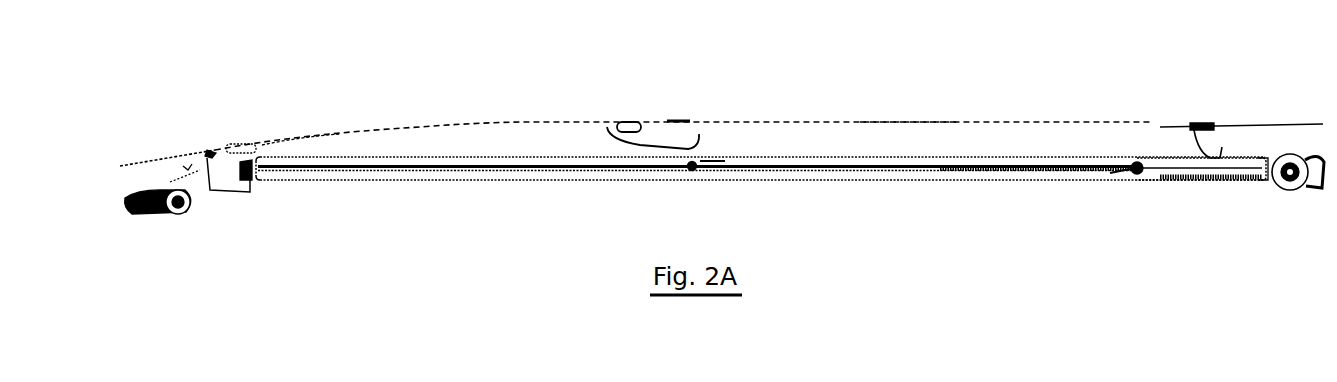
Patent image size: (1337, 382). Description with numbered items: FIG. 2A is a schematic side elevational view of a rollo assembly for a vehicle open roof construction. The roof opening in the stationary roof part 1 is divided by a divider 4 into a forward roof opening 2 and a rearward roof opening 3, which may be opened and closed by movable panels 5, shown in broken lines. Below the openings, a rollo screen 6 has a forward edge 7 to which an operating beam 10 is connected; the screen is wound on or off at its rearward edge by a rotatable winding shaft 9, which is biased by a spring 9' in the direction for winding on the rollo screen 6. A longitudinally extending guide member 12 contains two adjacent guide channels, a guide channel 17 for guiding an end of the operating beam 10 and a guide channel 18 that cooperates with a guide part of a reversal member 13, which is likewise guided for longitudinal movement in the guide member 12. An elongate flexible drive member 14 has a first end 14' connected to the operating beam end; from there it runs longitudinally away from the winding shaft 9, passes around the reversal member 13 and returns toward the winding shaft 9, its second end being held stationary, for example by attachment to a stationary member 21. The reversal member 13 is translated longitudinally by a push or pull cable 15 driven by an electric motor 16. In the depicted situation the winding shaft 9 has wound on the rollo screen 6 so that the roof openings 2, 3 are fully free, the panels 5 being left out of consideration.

The stationary roof part 1 is at (158, 156).
The forward roof opening 2 is at (352, 150).
The rearward roof opening 3 is at (908, 148).
The divider 4 is at (647, 140).
The movable panels 5 is at (483, 122).
The rollo screen 6 is at (1267, 184).
The forward edge 7 is at (1150, 182).
The winding shaft 9 is at (1298, 131).
The spring 9' is at (1288, 203).
The operating beam 10 is at (1136, 162).
The guide member 12 is at (302, 183).
The reversal member 13 is at (692, 172).
The elongate flexible drive member 14 is at (697, 203).
The first end 14' is at (1104, 204).
The push or pull cable 15 is at (403, 182).
The electric motor 16 is at (165, 207).
The guide channel 17 is at (1230, 182).
The guide channel 18 is at (1226, 160).
The stationary member 21 is at (730, 164).